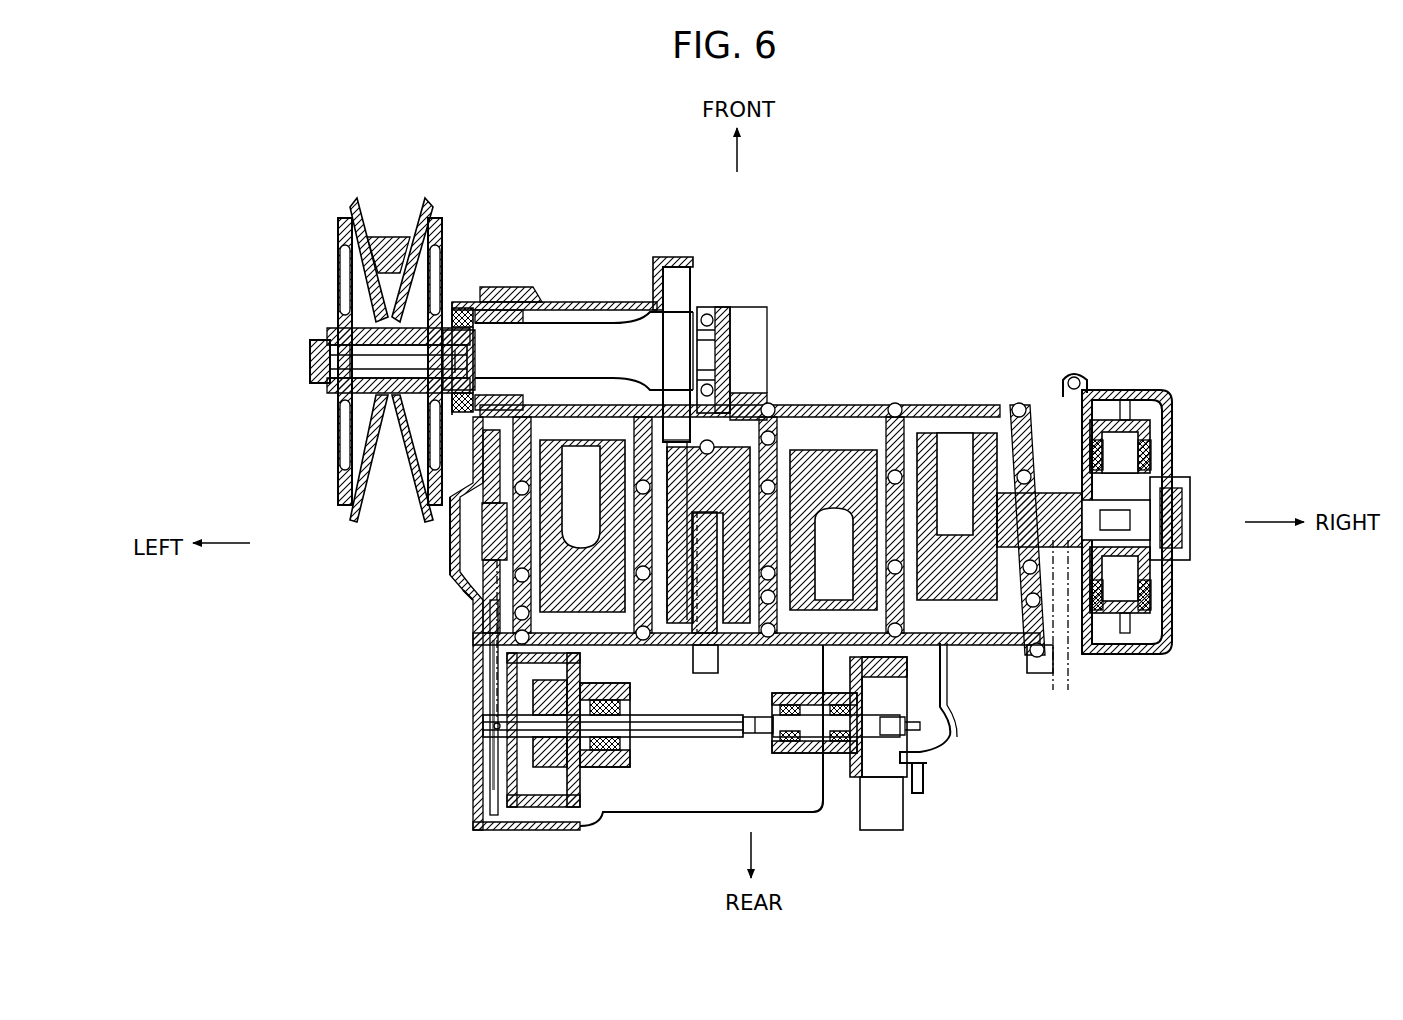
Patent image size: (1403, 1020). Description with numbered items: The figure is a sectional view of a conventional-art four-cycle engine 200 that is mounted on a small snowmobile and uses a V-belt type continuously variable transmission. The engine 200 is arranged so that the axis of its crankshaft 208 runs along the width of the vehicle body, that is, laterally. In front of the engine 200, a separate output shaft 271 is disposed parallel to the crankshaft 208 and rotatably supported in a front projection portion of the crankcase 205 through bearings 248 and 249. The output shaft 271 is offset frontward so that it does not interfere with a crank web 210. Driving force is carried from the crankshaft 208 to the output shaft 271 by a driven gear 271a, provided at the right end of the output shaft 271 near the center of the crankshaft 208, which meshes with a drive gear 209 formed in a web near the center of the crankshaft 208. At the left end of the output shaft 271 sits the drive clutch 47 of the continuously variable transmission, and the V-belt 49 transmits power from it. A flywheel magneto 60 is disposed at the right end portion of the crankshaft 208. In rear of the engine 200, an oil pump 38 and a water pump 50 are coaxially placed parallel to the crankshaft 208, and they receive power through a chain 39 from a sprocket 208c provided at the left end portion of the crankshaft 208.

The four-cycle engine 200 is at (958, 198).
The drive clutch 47 is at (420, 222).
The V-belt 49 is at (378, 232).
The bearing 249 is at (493, 287).
The output shaft 271 is at (565, 322).
The driven gear 271a is at (677, 292).
The bearing 248 is at (722, 308).
The drive gear 209 is at (697, 447).
The crankshaft 208 is at (832, 460).
The crankcase 205 is at (978, 403).
The crank web 210 is at (450, 535).
The sprocket 208c is at (465, 585).
The chain 39 is at (470, 638).
The oil pump 38 is at (578, 798).
The water pump 50 is at (952, 747).
The flywheel magneto 60 is at (1143, 633).